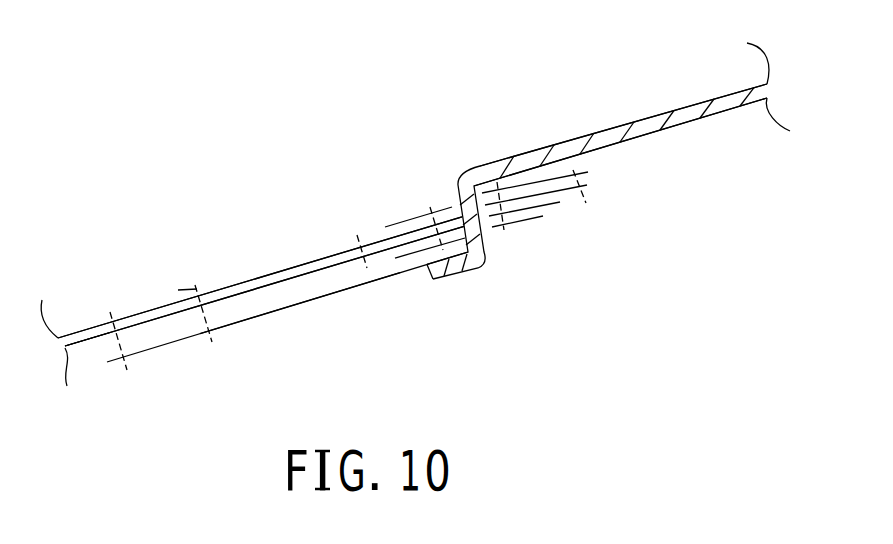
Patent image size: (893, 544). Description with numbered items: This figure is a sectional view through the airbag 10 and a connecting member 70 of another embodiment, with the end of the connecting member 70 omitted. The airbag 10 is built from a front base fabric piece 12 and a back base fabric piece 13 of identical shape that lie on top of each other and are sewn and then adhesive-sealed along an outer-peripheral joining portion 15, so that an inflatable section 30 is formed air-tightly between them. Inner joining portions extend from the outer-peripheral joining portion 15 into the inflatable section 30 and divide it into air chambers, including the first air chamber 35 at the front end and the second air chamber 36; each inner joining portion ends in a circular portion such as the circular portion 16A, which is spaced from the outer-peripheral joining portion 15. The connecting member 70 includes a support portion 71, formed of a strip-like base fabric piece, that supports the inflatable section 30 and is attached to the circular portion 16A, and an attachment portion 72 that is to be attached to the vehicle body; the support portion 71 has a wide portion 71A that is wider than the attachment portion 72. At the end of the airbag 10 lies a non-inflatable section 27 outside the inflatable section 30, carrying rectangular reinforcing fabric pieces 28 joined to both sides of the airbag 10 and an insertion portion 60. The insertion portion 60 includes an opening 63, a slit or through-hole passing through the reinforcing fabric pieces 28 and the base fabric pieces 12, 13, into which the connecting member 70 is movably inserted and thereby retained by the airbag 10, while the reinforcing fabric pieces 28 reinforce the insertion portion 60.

The airbag 10 is at (213, 258).
The front base fabric piece 12 is at (73, 334).
The back base fabric piece 13 is at (85, 347).
The outer-peripheral joining portion 15 is at (357, 235).
The circular portion 16A is at (113, 308).
The non-inflatable section 27 is at (589, 190).
The reinforcing fabric pieces 28 is at (407, 220).
The inflatable section 30 is at (258, 278).
The first air chamber 35 is at (295, 268).
The second air chamber 36 is at (86, 343).
The insertion portion 60 is at (456, 205).
The opening 63 is at (485, 230).
The connecting member 70 is at (342, 288).
The support portion 71 is at (292, 306).
The wide portion 71A is at (240, 322).
The attachment portion 72 is at (643, 127).